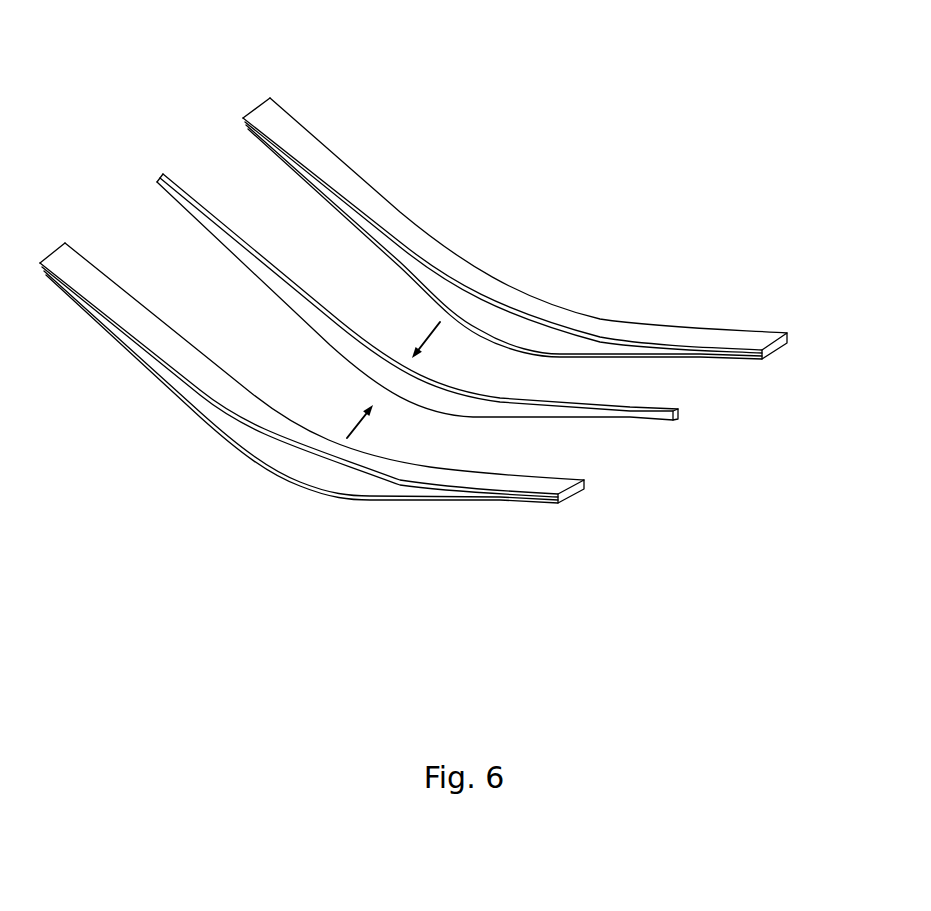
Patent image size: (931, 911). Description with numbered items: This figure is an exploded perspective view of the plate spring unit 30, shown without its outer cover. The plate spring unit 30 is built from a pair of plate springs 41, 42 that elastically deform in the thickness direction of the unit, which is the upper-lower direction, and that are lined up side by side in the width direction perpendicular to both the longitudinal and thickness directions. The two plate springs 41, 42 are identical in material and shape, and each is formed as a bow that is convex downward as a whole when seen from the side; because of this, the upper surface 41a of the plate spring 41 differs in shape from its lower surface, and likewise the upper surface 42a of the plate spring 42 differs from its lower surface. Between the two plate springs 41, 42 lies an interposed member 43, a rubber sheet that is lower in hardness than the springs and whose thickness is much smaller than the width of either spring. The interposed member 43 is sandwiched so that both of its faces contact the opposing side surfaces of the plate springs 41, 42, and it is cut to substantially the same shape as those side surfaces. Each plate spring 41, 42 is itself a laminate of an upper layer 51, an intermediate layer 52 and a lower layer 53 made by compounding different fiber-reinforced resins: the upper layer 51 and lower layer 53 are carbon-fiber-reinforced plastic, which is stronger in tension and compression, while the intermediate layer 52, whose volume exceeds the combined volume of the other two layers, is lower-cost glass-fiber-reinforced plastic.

The plate spring unit 30 is at (447, 303).
The plate spring 41 is at (346, 416).
The upper surface 41a is at (380, 472).
The plate spring 42 is at (548, 265).
The upper surface 42a is at (528, 298).
The interposed member 43 is at (681, 420).
The upper layer 51 is at (235, 423).
The intermediate layer 52 is at (257, 448).
The lower layer 53 is at (280, 475).